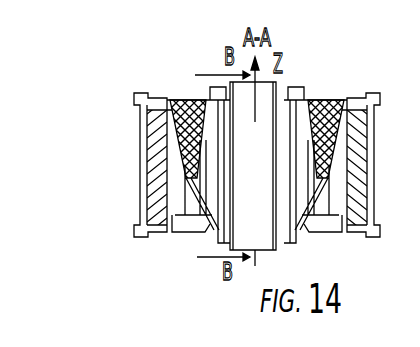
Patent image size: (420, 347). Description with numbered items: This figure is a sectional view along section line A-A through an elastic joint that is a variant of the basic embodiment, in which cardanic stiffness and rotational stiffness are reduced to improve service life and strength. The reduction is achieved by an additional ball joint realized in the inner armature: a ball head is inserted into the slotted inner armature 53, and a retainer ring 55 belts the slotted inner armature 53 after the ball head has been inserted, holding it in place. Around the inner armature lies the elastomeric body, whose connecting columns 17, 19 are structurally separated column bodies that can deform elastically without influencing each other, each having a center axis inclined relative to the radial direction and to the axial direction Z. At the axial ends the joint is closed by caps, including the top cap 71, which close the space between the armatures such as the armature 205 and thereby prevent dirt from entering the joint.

The connecting column 17 is at (313, 90).
The connecting column 19 is at (158, 96).
The slotted inner armature 53 is at (165, 178).
The retainer ring 55 is at (310, 94).
The top cap 71 is at (322, 236).
The armature 205 is at (140, 156).